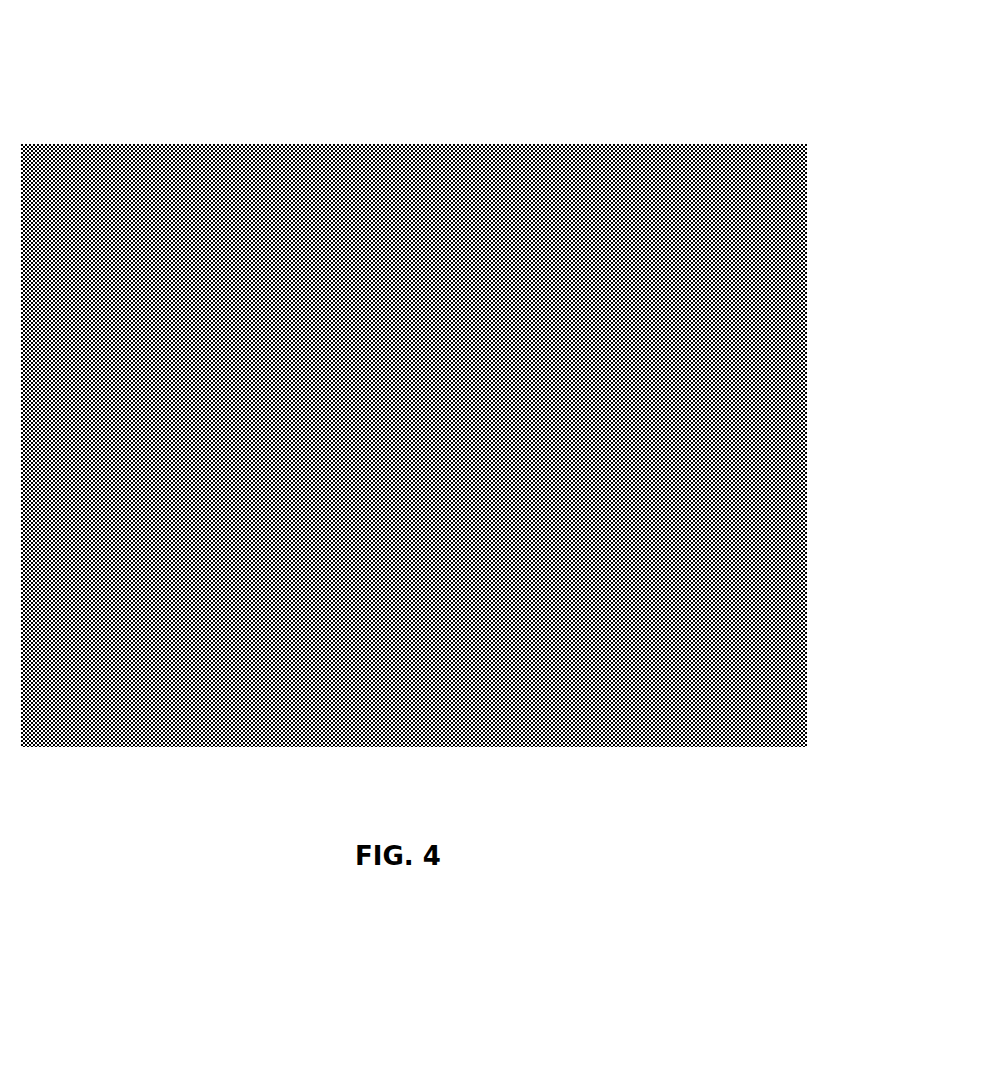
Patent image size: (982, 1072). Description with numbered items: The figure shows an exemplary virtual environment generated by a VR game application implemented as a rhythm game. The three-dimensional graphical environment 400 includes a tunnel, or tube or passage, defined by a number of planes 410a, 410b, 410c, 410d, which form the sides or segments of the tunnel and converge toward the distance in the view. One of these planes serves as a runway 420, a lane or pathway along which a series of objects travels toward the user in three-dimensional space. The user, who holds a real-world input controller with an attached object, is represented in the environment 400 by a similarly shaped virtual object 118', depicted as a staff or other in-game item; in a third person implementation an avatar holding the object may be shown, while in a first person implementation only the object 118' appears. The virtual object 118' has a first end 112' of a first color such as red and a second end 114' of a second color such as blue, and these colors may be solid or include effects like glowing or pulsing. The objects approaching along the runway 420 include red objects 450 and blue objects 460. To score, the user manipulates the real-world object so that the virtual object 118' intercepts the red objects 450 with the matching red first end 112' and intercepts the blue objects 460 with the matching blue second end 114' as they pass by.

The 3D graphical environment 400 is at (414, 429).
The red objects 450 is at (262, 372).
The plane 410a is at (224, 143).
The plane 410b is at (311, 143).
The plane 410c is at (401, 143).
The plane 410d is at (654, 143).
The blue objects 460 is at (343, 333).
The first end 112' is at (158, 655).
The runway 420 is at (457, 640).
The second end 114' is at (685, 727).
The virtual object 118' is at (592, 740).